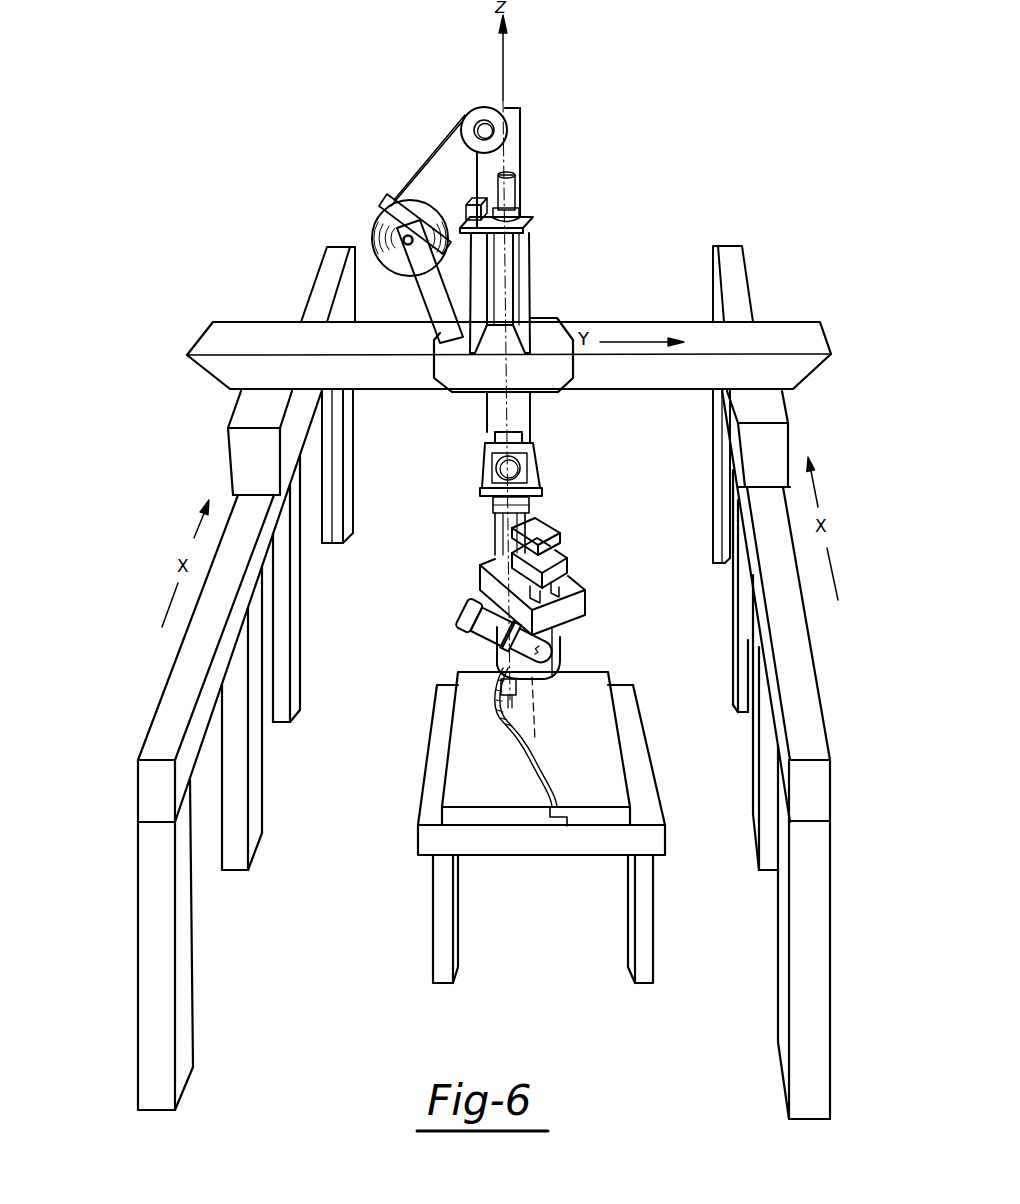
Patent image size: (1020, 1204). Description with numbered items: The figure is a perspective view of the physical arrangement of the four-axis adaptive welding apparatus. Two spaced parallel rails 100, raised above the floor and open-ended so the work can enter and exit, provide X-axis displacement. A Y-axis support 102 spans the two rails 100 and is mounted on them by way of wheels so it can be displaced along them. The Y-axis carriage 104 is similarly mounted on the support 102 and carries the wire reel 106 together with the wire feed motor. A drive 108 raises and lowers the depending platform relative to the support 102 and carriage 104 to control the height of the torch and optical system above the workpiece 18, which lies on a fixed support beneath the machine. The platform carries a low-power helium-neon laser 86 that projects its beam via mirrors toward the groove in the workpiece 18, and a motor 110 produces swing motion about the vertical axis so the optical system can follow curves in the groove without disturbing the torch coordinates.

The workpiece 18 is at (603, 778).
The low-power helium-neon laser 86 is at (478, 631).
The spaced parallel rails 100 is at (176, 687).
The Y-axis support 102 is at (787, 330).
The Y-axis carriage 104 is at (558, 393).
The wire reel 106 is at (378, 220).
The X-axis drive 108 is at (488, 507).
The motor 110 is at (546, 530).